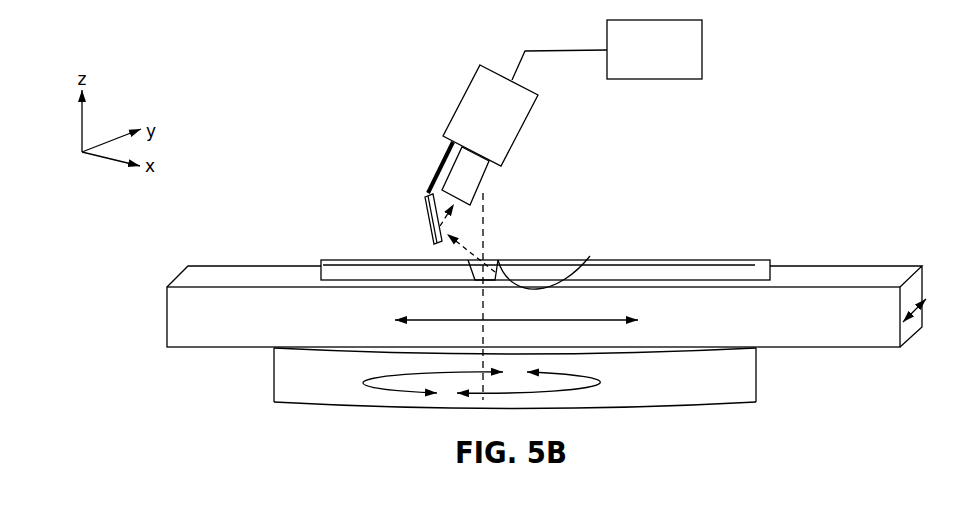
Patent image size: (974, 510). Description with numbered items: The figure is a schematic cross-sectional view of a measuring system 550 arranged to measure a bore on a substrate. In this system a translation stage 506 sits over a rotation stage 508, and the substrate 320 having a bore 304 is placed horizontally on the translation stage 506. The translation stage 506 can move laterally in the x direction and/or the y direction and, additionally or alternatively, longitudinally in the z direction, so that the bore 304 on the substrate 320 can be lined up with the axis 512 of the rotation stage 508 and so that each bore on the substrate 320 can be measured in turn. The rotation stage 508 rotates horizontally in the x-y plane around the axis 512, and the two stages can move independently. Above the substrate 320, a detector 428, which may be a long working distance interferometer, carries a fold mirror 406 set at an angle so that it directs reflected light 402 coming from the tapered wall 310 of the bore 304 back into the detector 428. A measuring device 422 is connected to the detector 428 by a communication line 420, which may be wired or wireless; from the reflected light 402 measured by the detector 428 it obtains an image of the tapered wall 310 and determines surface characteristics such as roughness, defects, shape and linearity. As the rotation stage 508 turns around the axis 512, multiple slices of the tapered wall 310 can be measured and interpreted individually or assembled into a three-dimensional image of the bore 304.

The measuring system 550 is at (860, 133).
The measuring device 422 is at (702, 50).
The communication line 420 is at (570, 50).
The detector 428 is at (421, 135).
The fold mirror 406 is at (434, 236).
The reflected light 402 is at (483, 222).
The axis 512 is at (485, 245).
The translation stage 506 is at (853, 266).
The substrate 320 is at (724, 261).
The bore 304 is at (498, 261).
The tapered wall 310 is at (590, 256).
The rotation stage 508 is at (746, 376).